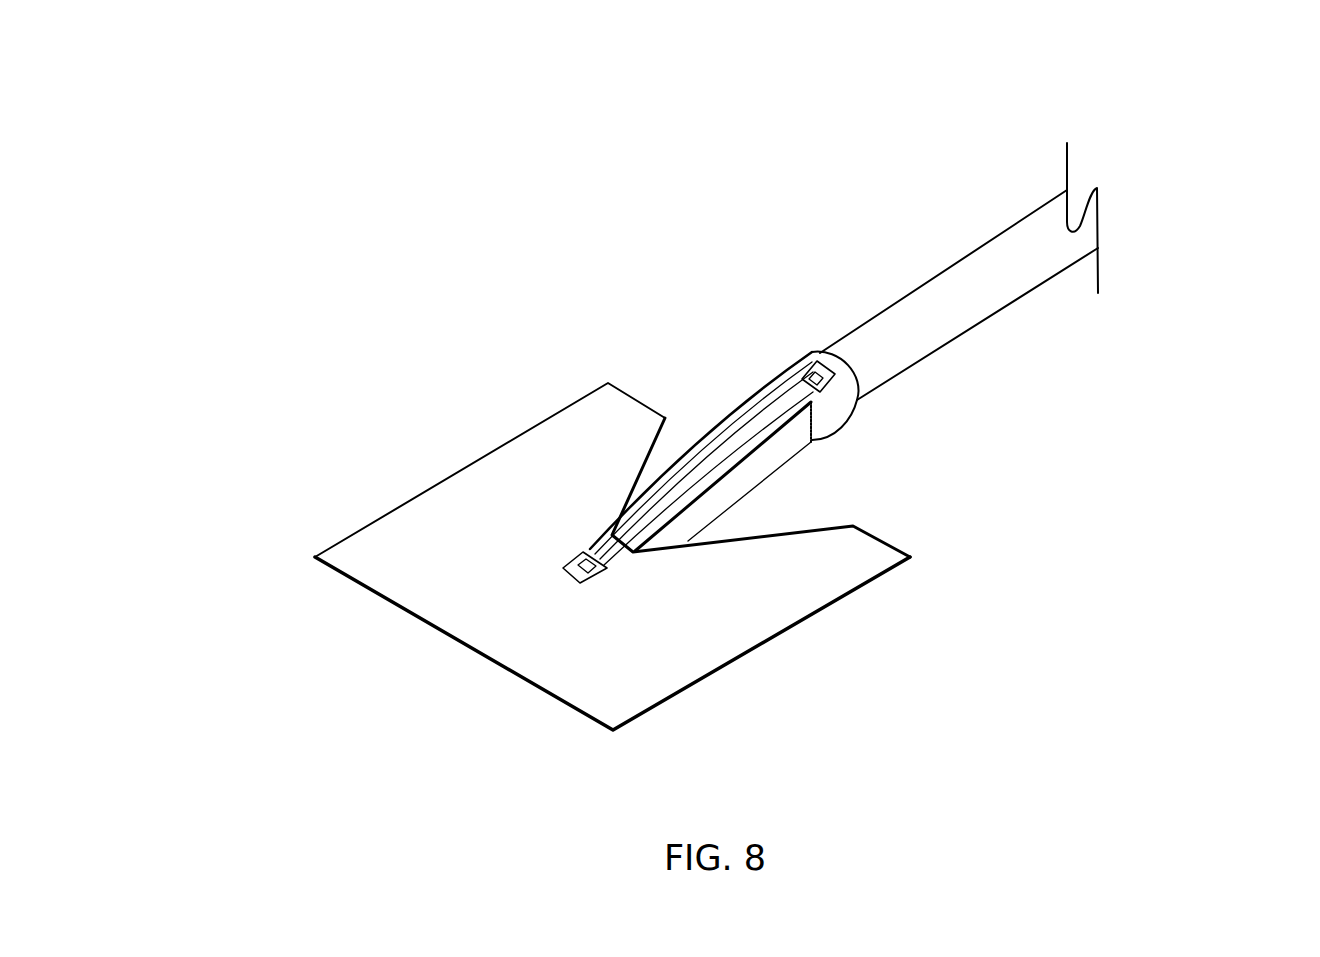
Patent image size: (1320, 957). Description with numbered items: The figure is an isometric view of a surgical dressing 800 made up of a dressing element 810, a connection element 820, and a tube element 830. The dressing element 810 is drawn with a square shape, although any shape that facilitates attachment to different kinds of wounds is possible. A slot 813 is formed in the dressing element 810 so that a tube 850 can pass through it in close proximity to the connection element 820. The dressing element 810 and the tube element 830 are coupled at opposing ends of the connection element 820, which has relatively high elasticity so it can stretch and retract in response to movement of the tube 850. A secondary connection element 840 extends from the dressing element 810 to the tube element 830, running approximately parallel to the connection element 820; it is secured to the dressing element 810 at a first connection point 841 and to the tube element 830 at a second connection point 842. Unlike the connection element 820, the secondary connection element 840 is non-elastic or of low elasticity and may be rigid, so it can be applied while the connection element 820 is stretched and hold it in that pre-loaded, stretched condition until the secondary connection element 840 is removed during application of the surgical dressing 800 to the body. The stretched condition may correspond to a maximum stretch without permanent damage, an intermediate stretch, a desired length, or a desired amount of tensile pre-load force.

The surgical dressing 800 is at (520, 135).
The dressing element 810 is at (553, 468).
The slot 813 is at (718, 527).
The connection element 820 is at (690, 488).
The tube element 830 is at (832, 405).
The secondary connection element 840 is at (607, 545).
The first connection point 841 is at (565, 573).
The second connection point 842 is at (830, 368).
The tube 850 is at (943, 302).